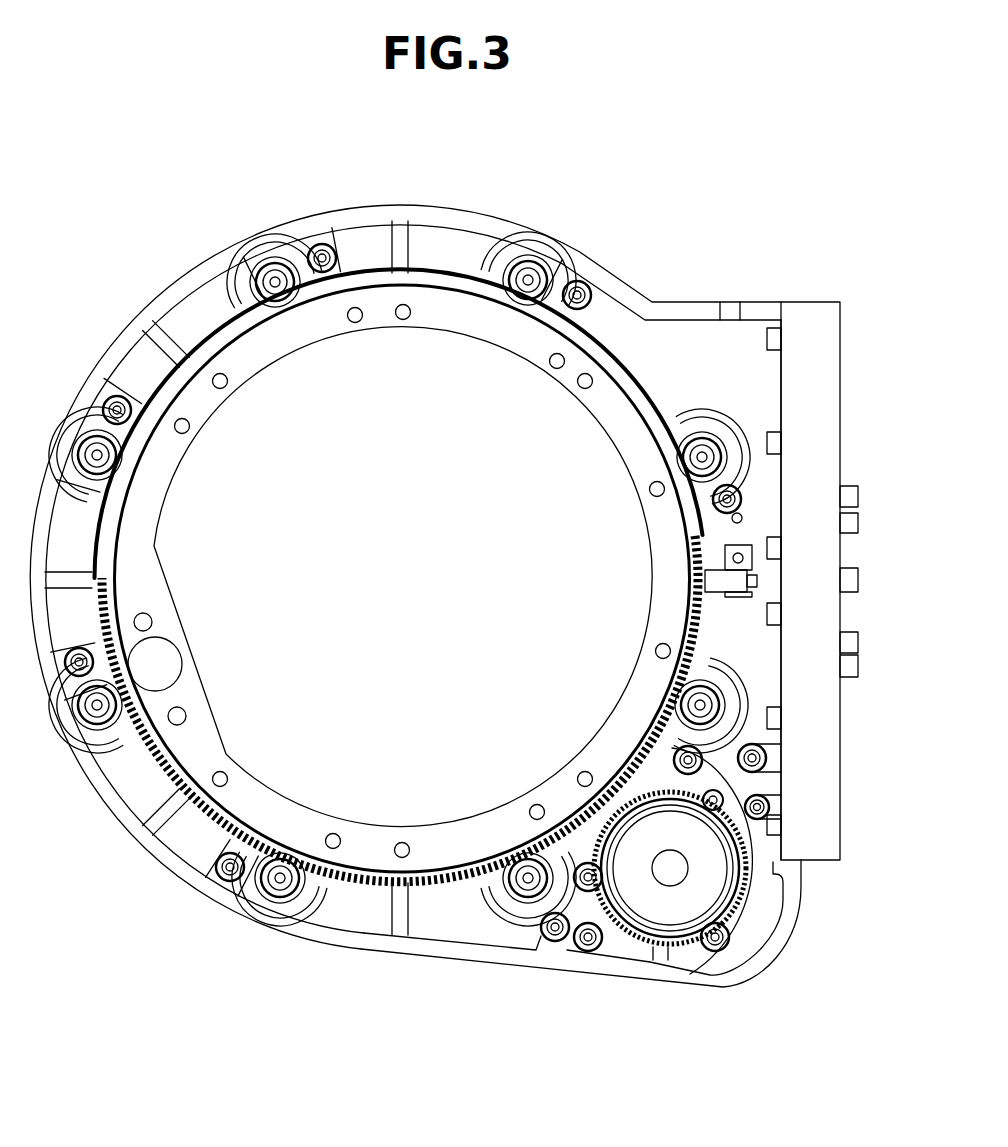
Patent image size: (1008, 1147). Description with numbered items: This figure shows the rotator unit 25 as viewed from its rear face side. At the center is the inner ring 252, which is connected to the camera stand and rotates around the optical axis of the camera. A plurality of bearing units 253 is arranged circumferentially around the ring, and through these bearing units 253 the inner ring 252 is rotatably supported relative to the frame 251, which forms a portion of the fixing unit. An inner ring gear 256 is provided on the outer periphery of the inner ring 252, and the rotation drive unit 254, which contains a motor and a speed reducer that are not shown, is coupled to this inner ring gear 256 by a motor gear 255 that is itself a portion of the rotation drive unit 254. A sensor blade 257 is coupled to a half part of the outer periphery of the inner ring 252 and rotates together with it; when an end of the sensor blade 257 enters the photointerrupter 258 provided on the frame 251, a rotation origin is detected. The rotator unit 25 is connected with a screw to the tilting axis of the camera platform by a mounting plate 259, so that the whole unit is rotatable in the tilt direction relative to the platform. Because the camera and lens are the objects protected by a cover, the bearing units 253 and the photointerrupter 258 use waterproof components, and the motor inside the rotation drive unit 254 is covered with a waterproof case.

The rotator unit 25 is at (582, 176).
The frame 251 is at (698, 383).
The inner ring 252 is at (648, 718).
The bearing unit 253 is at (723, 447).
The rotation drive unit 254 is at (695, 813).
The motor gear 255 is at (663, 919).
The inner ring gear 256 is at (671, 919).
The sensor blade 257 is at (399, 552).
The photointerrupter 258 is at (712, 596).
The mounting plate 259 is at (812, 327).